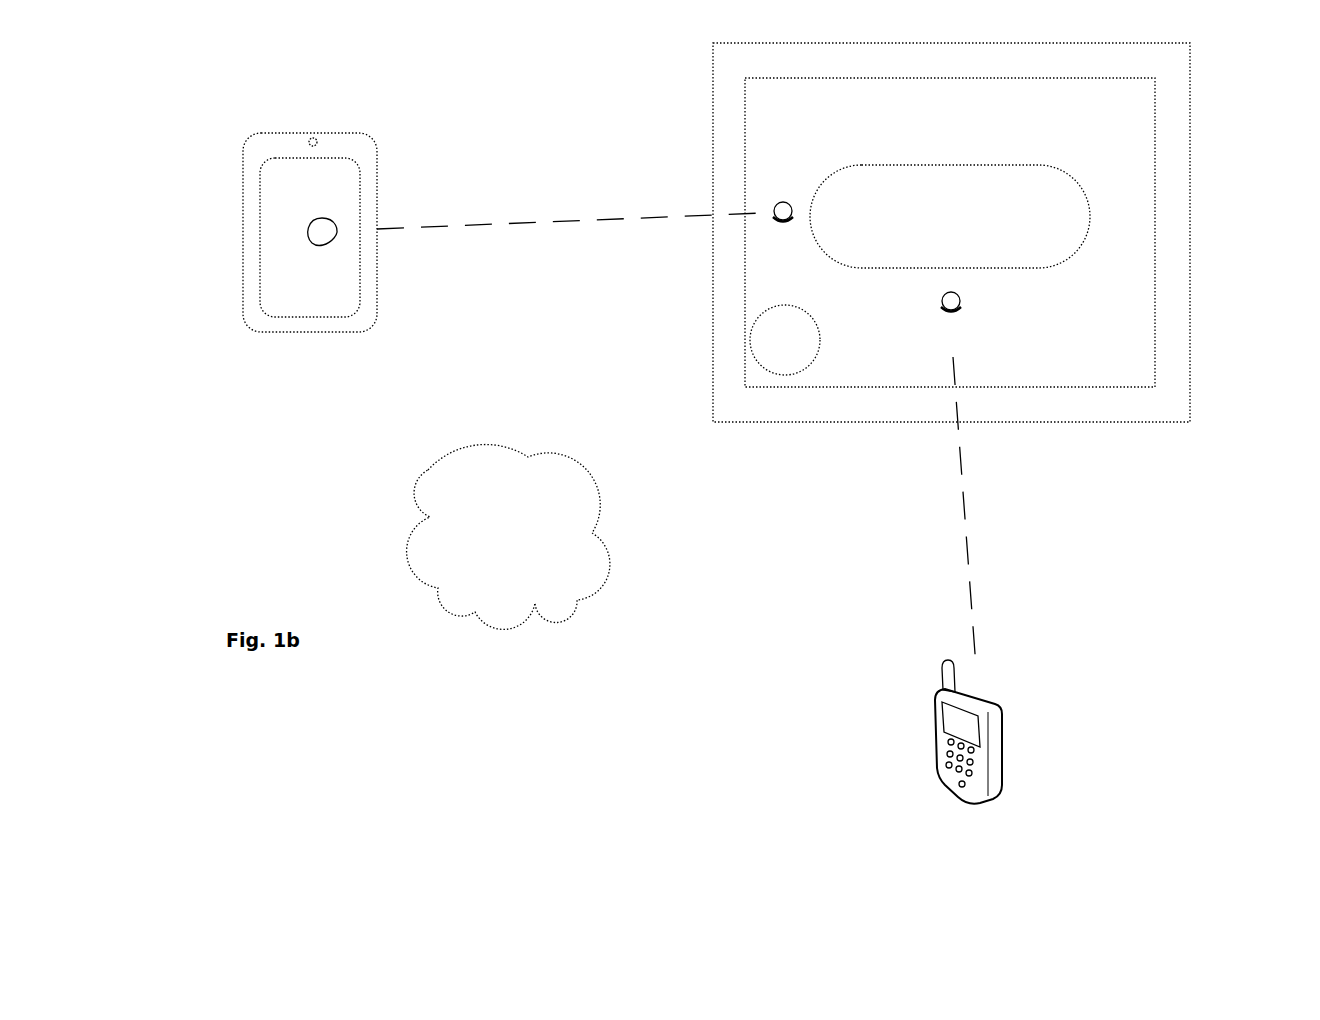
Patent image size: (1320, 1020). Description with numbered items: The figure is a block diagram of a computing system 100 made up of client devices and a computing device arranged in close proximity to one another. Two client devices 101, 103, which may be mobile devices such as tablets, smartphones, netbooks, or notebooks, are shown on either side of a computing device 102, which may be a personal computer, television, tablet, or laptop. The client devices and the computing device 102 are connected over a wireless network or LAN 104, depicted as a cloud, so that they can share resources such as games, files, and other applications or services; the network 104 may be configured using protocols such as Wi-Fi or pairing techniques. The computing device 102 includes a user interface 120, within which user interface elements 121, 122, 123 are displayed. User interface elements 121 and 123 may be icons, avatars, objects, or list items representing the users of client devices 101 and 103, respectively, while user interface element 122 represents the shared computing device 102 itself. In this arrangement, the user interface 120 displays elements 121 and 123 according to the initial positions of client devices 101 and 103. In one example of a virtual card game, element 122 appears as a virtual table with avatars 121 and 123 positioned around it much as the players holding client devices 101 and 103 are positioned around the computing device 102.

The computing system 100 is at (275, 421).
The client device 101 is at (243, 282).
The computing device 102 is at (710, 349).
The client device 103 is at (1005, 745).
The wireless network or LAN 104 is at (420, 524).
The user interface 120 is at (1033, 357).
The user interface element 121 is at (783, 201).
The user interface element 122 is at (1090, 218).
The user interface element 123 is at (962, 300).